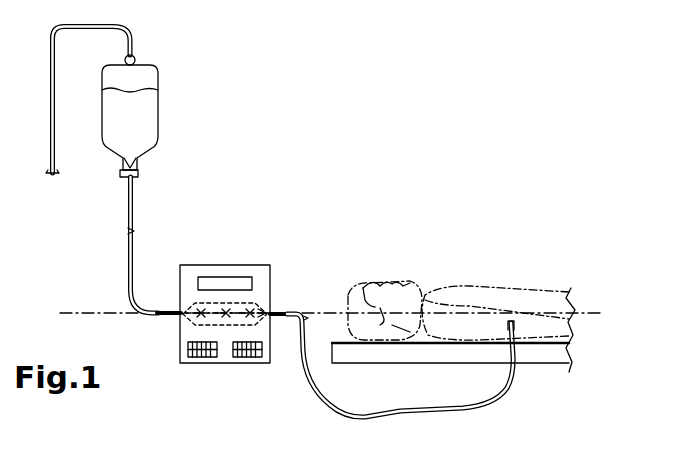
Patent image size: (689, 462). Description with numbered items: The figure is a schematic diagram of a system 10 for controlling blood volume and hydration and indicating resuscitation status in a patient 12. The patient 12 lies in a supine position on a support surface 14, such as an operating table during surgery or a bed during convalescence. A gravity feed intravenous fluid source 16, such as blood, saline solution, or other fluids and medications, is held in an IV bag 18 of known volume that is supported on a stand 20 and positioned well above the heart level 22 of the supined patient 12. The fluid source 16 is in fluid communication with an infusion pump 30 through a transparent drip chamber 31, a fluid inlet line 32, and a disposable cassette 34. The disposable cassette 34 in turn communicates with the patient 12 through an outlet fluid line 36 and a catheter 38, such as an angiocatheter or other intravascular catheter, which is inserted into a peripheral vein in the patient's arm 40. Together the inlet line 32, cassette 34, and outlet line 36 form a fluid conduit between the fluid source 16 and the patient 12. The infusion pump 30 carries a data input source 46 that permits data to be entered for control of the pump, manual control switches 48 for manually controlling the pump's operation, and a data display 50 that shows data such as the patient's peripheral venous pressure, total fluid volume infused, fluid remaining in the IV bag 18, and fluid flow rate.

The system 10 is at (326, 152).
The patient 12 is at (478, 287).
The support surface 14 is at (541, 355).
The gravity feed intravenous fluid source 16 is at (143, 118).
The IV bag 18 is at (158, 68).
The stand 20 is at (113, 26).
The heart level 22 is at (100, 316).
The infusion pump 30 is at (265, 265).
The transparent drip chamber 31 is at (138, 166).
The fluid inlet line 32 is at (128, 260).
The disposable cassette 34 is at (266, 301).
The outlet fluid line 36 is at (403, 412).
The catheter 38 is at (511, 323).
The arm 40 is at (572, 317).
The data input source 46 is at (200, 357).
The manual control switches 48 is at (247, 357).
The data display 50 is at (217, 281).